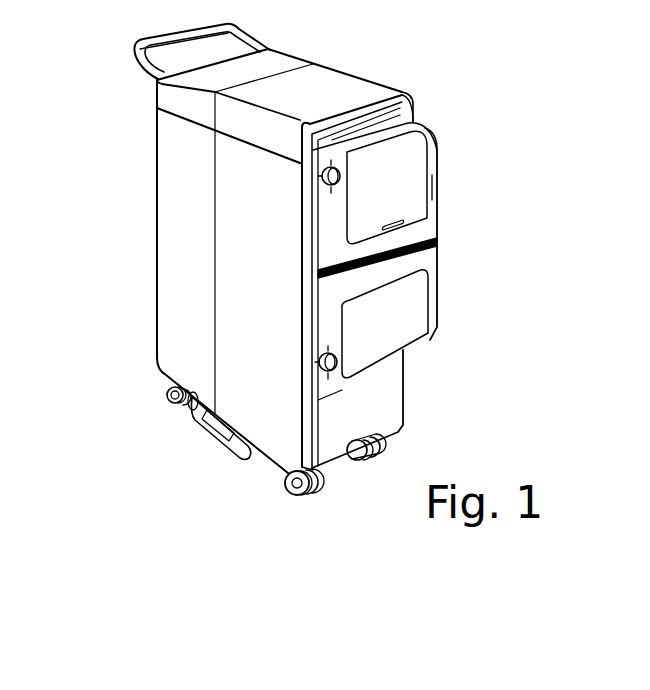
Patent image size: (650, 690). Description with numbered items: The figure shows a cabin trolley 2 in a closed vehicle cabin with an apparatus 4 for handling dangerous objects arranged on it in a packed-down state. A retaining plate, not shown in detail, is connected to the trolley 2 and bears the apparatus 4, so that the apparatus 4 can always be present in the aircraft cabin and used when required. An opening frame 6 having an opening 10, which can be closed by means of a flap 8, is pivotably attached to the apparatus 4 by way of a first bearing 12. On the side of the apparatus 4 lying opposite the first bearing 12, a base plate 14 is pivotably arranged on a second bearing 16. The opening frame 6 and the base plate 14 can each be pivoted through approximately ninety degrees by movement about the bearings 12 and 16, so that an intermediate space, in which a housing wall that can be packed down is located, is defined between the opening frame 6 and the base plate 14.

The cabin trolley 2 is at (323, 87).
The apparatus for handling dangerous objects 4 is at (453, 213).
The opening frame 6 is at (437, 160).
The flap 8 is at (398, 152).
The opening 10 is at (438, 186).
The first bearing 12 is at (320, 177).
The base plate 14 is at (423, 254).
The second bearing 16 is at (320, 356).